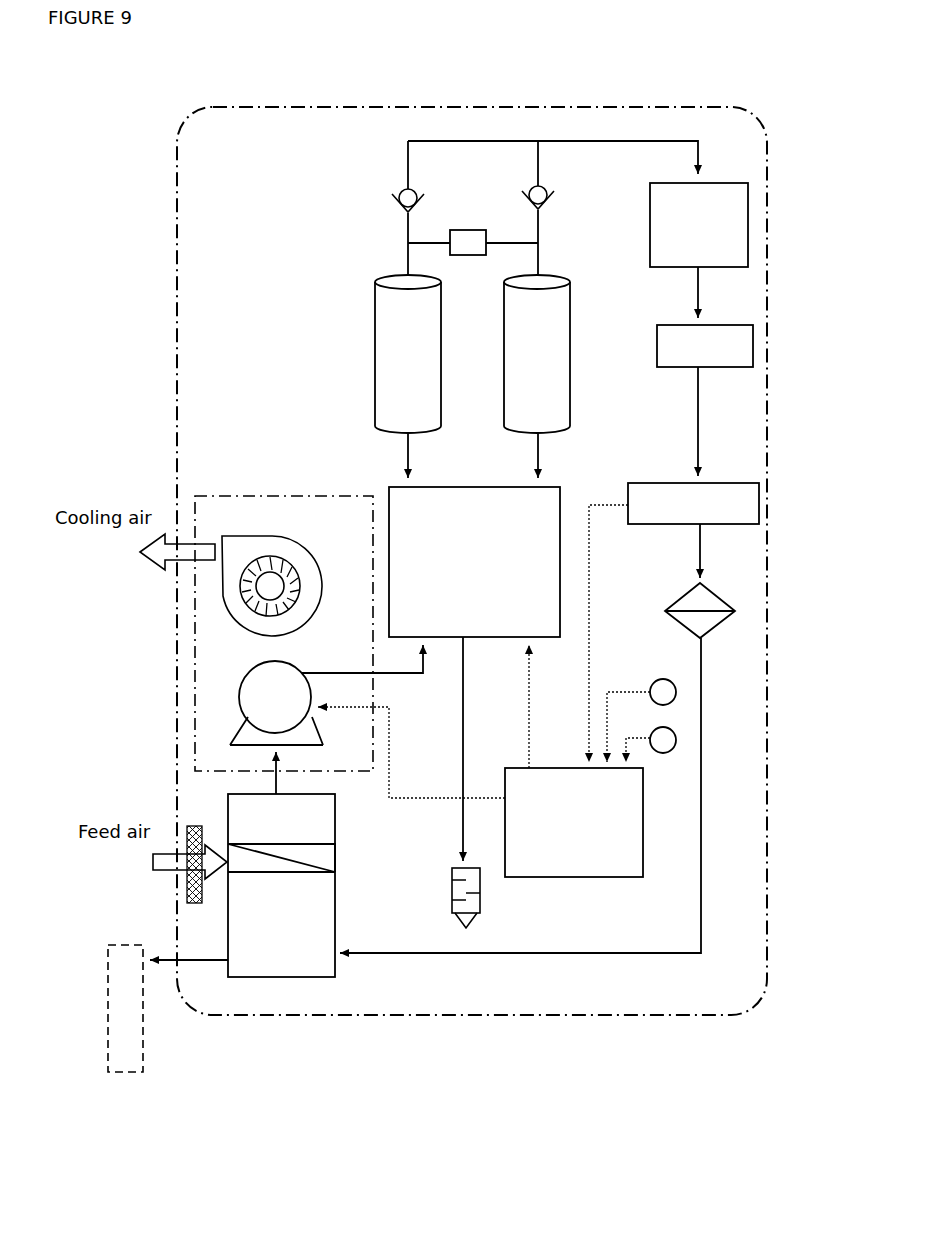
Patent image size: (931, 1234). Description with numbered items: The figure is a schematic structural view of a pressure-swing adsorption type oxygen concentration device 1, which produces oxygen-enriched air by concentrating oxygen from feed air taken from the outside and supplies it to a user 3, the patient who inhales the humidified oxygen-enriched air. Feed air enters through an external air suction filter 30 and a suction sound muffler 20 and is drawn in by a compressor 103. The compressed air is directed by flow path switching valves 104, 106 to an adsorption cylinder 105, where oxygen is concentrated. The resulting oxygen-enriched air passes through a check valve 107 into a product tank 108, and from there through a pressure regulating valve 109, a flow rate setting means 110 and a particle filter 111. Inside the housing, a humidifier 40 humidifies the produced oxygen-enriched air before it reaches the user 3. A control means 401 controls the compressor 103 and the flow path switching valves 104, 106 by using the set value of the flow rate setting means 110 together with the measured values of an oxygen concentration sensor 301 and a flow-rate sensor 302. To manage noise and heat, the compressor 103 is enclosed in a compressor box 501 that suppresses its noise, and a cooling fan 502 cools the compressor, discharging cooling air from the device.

The oxygen concentration device 1 is at (470, 104).
The user 3 is at (112, 1058).
The suction sound muffler 20 is at (270, 885).
The external air suction filter 30 is at (325, 853).
The humidifier 40 is at (306, 927).
The compressor 103 is at (240, 707).
The flow path switching valve 104 is at (560, 487).
The adsorption cylinder 105 is at (505, 292).
The flow path switching valve 106 is at (408, 236).
The check valve 107 is at (527, 192).
The product tank 108 is at (727, 196).
The pressure regulating valve 109 is at (745, 332).
The flow rate setting means 110 is at (740, 494).
The particle filter 111 is at (723, 601).
The oxygen concentration sensor 301 is at (665, 692).
The flow-rate sensor 302 is at (665, 738).
The control means 401 is at (574, 822).
The compressor box 501 is at (195, 640).
The cooling fan 502 is at (257, 534).